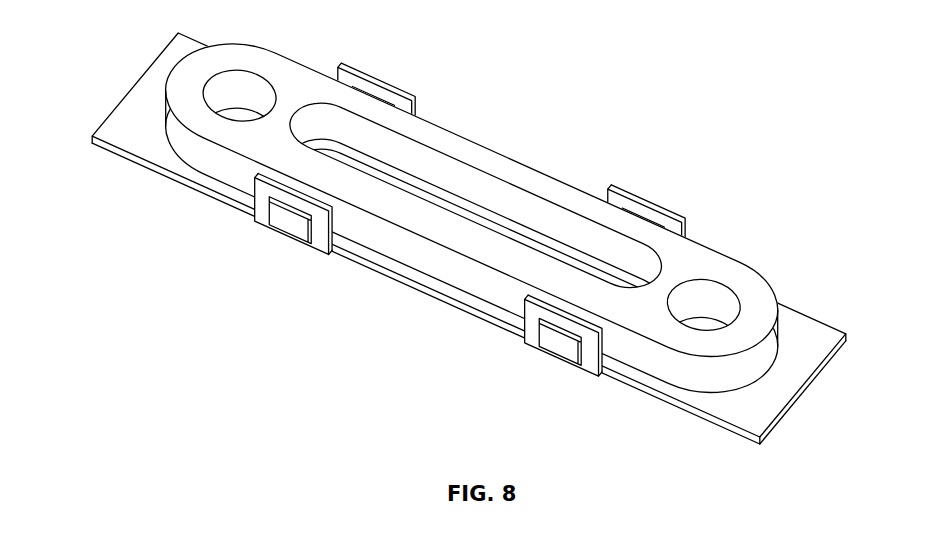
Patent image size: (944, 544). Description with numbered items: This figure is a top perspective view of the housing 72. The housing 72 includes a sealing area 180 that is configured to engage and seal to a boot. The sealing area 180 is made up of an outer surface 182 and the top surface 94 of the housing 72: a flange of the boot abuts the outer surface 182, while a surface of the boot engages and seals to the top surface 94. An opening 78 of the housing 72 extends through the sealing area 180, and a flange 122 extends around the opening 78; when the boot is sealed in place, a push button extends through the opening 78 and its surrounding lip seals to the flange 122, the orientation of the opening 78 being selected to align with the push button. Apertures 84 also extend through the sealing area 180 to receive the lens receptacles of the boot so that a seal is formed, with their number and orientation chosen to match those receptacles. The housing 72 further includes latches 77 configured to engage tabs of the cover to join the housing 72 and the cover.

The housing 72 is at (470, 247).
The latches 77 is at (260, 215).
The opening 78 is at (452, 217).
The apertures 84 is at (237, 93).
The top surface 94 is at (700, 275).
The flange 122 is at (487, 202).
The sealing area 180 is at (757, 285).
The outer surface 182 is at (698, 378).